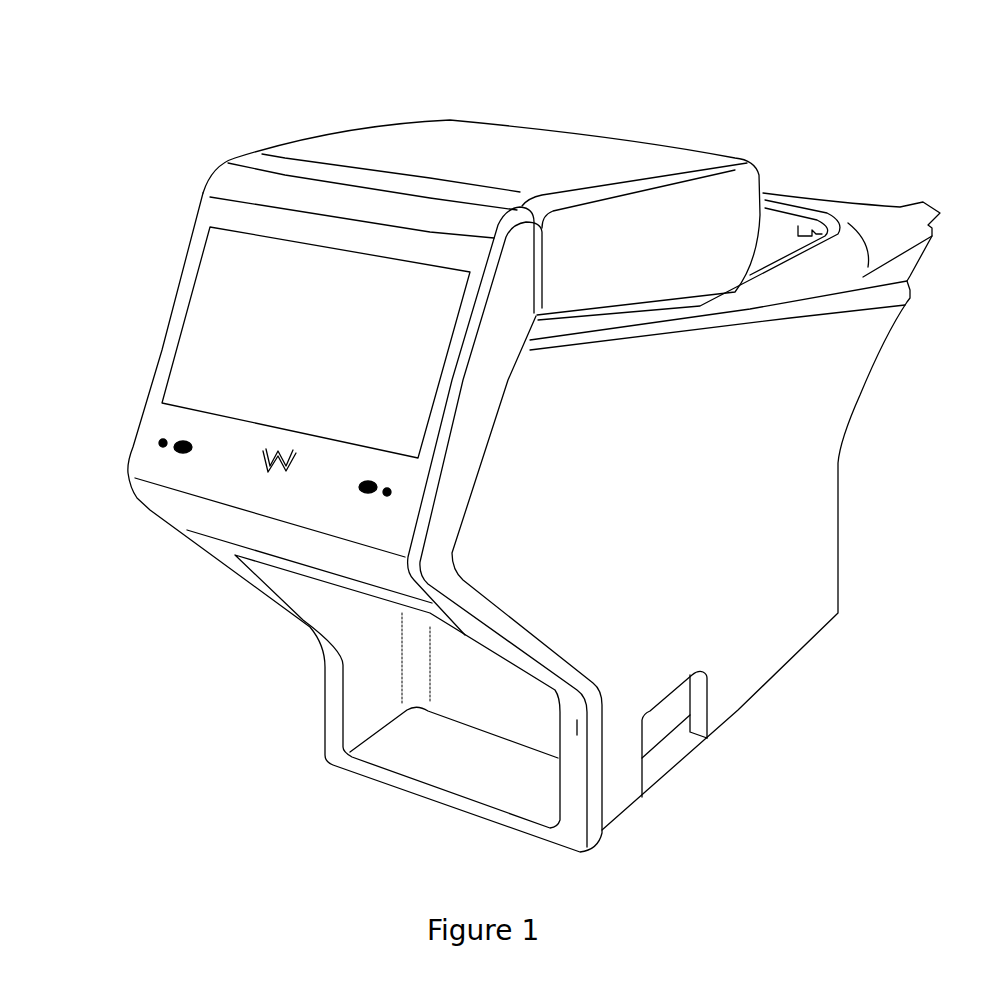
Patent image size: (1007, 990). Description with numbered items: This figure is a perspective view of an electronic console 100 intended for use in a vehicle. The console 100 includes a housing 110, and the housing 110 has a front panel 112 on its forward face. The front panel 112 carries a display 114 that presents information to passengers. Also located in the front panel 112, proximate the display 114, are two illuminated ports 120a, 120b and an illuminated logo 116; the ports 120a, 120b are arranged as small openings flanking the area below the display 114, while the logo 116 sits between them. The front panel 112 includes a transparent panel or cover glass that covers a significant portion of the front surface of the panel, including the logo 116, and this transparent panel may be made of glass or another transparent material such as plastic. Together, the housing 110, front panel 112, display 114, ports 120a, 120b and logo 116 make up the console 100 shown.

The console 100 is at (168, 105).
The housing 110 is at (450, 212).
The front panel 112 is at (185, 475).
The display 114 is at (235, 318).
The illuminated logo 116 is at (263, 468).
The illuminated port 120a is at (158, 440).
The illuminated port 120b is at (388, 494).